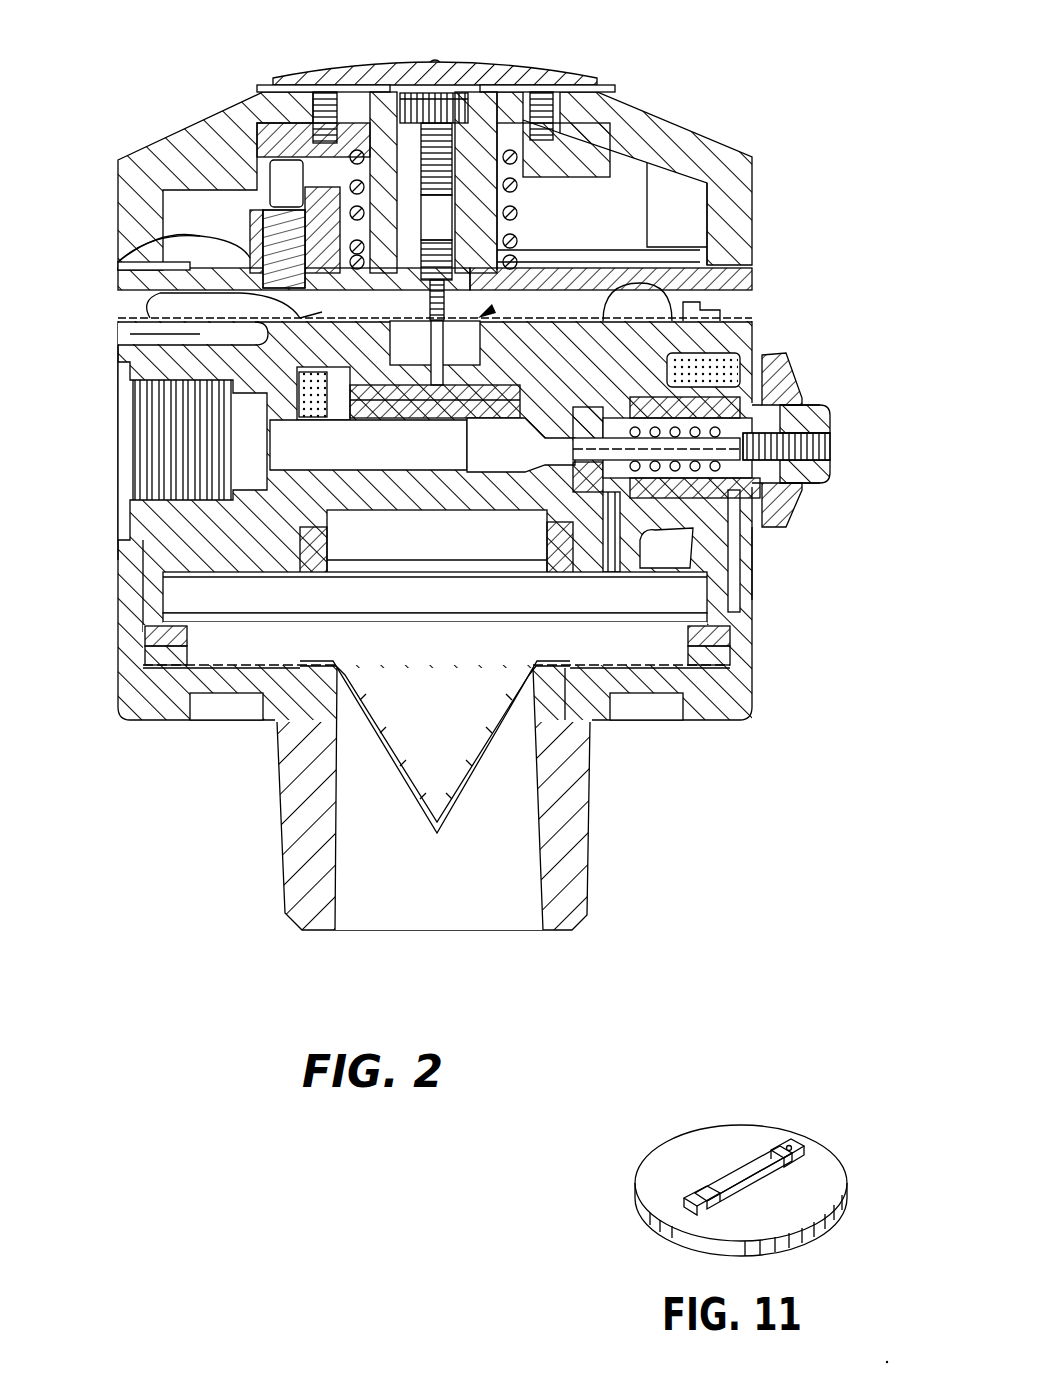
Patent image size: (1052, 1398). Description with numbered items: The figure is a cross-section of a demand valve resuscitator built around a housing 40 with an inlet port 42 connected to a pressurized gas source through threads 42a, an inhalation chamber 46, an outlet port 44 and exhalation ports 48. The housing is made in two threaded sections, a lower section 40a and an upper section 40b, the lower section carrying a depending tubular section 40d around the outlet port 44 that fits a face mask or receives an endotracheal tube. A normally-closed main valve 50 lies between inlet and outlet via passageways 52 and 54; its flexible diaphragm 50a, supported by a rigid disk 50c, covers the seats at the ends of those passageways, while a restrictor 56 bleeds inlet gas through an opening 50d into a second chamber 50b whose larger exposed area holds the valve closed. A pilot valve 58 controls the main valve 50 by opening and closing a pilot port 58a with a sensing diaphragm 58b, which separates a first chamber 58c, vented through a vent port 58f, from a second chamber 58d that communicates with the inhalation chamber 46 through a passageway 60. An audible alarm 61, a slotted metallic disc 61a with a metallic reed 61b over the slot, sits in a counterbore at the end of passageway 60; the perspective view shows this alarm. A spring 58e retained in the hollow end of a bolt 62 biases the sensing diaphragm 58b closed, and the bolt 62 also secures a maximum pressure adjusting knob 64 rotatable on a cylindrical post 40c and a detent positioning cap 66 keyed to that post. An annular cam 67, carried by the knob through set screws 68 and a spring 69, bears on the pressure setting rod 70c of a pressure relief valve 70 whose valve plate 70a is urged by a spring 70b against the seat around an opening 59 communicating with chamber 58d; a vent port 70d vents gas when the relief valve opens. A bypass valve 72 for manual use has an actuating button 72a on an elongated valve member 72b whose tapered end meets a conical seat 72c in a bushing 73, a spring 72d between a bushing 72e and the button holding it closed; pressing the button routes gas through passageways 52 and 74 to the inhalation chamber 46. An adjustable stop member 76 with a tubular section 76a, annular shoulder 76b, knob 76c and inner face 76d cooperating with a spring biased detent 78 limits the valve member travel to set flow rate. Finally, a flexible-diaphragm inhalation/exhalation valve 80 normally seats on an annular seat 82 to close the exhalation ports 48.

In FIG. 2, the housing 40 is at (780, 604).
In FIG. 2, the lower section 40a is at (118, 652).
In FIG. 2, the upper section 40b is at (118, 356).
In FIG. 2, the upstanding cylindrical post 40c is at (433, 72).
In FIG. 2, the depending tubular section 40d is at (590, 853).
In FIG. 2, the inlet port 42 is at (160, 450).
In FIG. 2, the threads 42a is at (150, 405).
In FIG. 2, the outlet port 44 is at (490, 885).
In FIG. 2, the inhalation chamber 46 is at (469, 700).
In FIG. 2, the exhalation ports 48 is at (228, 712).
In FIG. 2, the main valve 50 is at (396, 457).
In FIG. 2, the flexible diaphragm 50a is at (383, 424).
In FIG. 2, the second chamber 50b is at (492, 306).
In FIG. 2, the rigid disk 50c is at (432, 318).
In FIG. 2, the opening 50d is at (352, 318).
In FIG. 2, the passageway 52 is at (449, 456).
In FIG. 2, the passageway 54 is at (455, 462).
In FIG. 2, the restrictor 56 is at (315, 412).
In FIG. 2, the pilot valve 58 is at (565, 300).
In FIG. 2, the pilot port 58a is at (500, 262).
In FIG. 2, the sensing diaphragm 58b is at (700, 250).
In FIG. 2, the first chamber 58c is at (730, 290).
In FIG. 2, the second chamber 58d is at (640, 242).
In FIG. 2, the spring 58e is at (516, 226).
In FIG. 2, the vent port 58f is at (118, 340).
In FIG. 2, the opening 59 is at (150, 300).
In FIG. 2, the passageway 60 is at (735, 315).
In FIG. 2, the audible alarm 61 is at (688, 614).
In FIG. 11, the audible alarm 61 is at (750, 1104).
In FIG. 11, the slotted metallic disc 61a is at (812, 1185).
In FIG. 11, the metallic reed 61b is at (760, 1165).
In FIG. 2, the bolt 62 is at (436, 92).
In FIG. 2, the maximum pressure adjusting knob 64 is at (678, 126).
In FIG. 2, the detent positioning cap 66 is at (366, 70).
In FIG. 2, the annular cam 67 is at (535, 92).
In FIG. 2, the set screws 68 is at (325, 98).
In FIG. 2, the spring 69 is at (505, 120).
In FIG. 2, the pressure relief valve 70 is at (248, 216).
In FIG. 2, the valve plate 70a is at (270, 232).
In FIG. 2, the spring 70b is at (312, 250).
In FIG. 2, the pressure setting rod 70c is at (285, 185).
In FIG. 2, the vent port 70d is at (140, 242).
In FIG. 2, the bypass valve 72 is at (850, 450).
In FIG. 2, the actuating button 72a is at (832, 427).
In FIG. 2, the elongated valve member 72b is at (812, 410).
In FIG. 2, the conical seat 72c is at (595, 470).
In FIG. 2, the spring 72d is at (780, 500).
In FIG. 2, the bushing 72e is at (762, 576).
In FIG. 2, the bushing 73 is at (573, 566).
In FIG. 2, the passageway 74 is at (610, 500).
In FIG. 2, the adjustable stop member 76 is at (845, 396).
In FIG. 2, the tubular section 76a is at (790, 392).
In FIG. 2, the annular shoulder 76b is at (803, 490).
In FIG. 2, the knob 76c is at (800, 398).
In FIG. 2, the inner face 76d is at (757, 527).
In FIG. 2, the spring biased detent 78 is at (742, 368).
In FIG. 2, the inhalation/exhalation valve 80 is at (480, 770).
In FIG. 2, the annular seat 82 is at (592, 722).